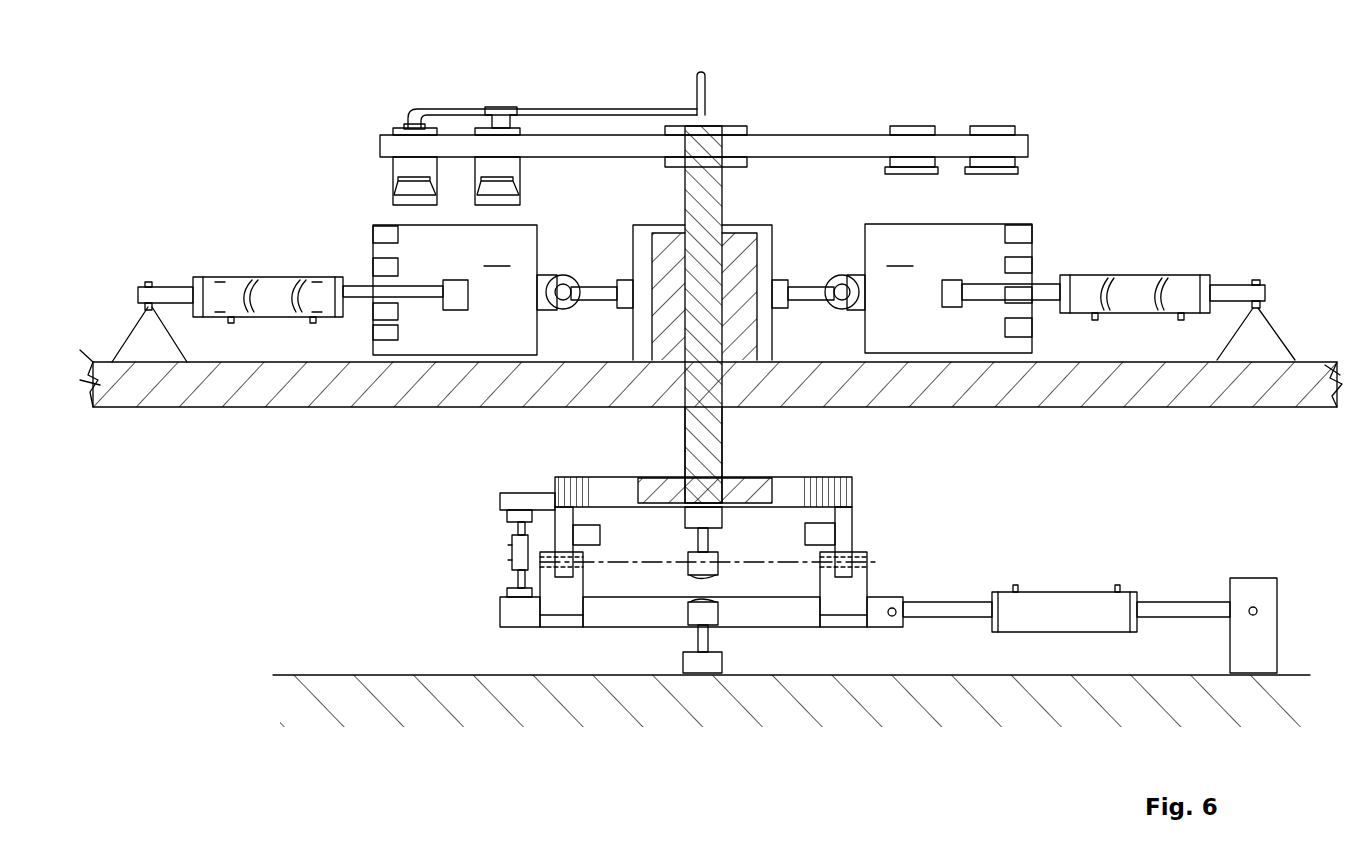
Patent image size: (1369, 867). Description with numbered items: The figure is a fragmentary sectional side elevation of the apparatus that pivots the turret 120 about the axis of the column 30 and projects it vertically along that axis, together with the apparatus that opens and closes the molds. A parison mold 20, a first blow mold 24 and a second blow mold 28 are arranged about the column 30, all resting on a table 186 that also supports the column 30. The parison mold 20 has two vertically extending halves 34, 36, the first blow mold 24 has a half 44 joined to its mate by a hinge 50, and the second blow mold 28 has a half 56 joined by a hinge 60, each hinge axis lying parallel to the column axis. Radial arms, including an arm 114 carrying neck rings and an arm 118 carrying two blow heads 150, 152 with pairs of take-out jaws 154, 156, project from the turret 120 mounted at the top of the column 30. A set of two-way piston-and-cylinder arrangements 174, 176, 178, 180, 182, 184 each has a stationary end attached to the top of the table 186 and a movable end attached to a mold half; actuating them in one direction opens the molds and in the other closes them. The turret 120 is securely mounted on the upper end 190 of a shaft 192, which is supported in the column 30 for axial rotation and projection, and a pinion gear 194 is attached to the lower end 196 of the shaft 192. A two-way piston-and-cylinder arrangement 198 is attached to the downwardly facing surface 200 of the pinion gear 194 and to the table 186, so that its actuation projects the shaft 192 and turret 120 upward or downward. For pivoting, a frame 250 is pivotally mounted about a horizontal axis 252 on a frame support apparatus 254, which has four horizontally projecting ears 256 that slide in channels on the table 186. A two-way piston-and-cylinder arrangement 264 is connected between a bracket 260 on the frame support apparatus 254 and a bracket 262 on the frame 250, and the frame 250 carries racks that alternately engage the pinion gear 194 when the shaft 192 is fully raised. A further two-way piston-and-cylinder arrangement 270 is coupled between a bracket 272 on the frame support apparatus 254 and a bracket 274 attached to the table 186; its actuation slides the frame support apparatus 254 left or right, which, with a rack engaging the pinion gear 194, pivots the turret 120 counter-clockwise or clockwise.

The parison mold 20 is at (658, 225).
The first blow mold 24 is at (360, 223).
The second blow mold 28 is at (1040, 223).
The column 30 is at (740, 238).
The parison mold half 34 is at (645, 250).
The parison mold half 36 is at (768, 242).
The blow mold half 44 is at (455, 290).
The hinge 50 is at (378, 250).
The blow mold half 56 is at (948, 288).
The hinge 60 is at (1020, 247).
The arm 114 is at (842, 135).
The arm 118 is at (596, 135).
The turret 120 is at (718, 125).
The blow head 150 is at (410, 125).
The blow head 152 is at (515, 110).
The take-out jaws 154 is at (396, 195).
The take-out jaws 156 is at (508, 195).
The two-way piston-and-cylinder arrangement 174 is at (555, 277).
The two-way piston-and-cylinder arrangement 176 is at (855, 280).
The two-way piston-and-cylinder arrangement 178 is at (218, 285).
The two-way piston-and-cylinder arrangement 180 is at (270, 310).
The two-way piston-and-cylinder arrangement 182 is at (1150, 280).
The two-way piston-and-cylinder arrangement 184 is at (1080, 310).
The table 186 is at (405, 405).
The upper end of shaft 190 is at (745, 150).
The shaft 192 is at (680, 410).
The pinion gear 194 is at (785, 480).
The lower end of shaft 196 is at (715, 478).
The two-way piston-and-cylinder arrangement 198 is at (688, 580).
The downwardly facing surface of pinion gear 200 is at (660, 507).
The frame 250 is at (892, 505).
The horizontal axis 252 is at (890, 565).
The frame support apparatus 254 is at (860, 578).
The ears 256 is at (555, 625).
The bracket 260 is at (505, 613).
The bracket 262 is at (500, 498).
The two-way piston-and-cylinder arrangement 264 is at (504, 556).
The two-way piston-and-cylinder arrangement 270 is at (1066, 590).
The bracket 272 is at (890, 622).
The bracket 274 is at (1270, 600).